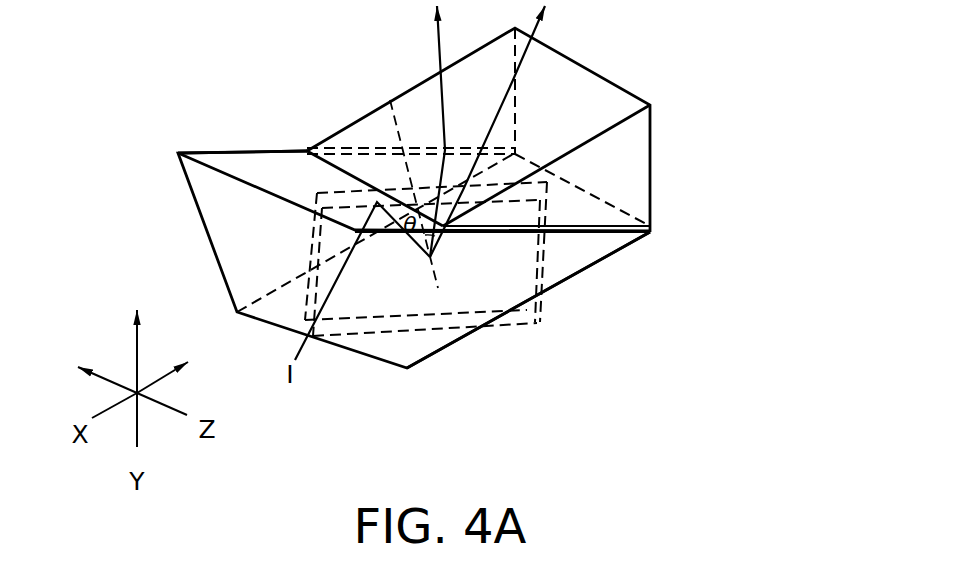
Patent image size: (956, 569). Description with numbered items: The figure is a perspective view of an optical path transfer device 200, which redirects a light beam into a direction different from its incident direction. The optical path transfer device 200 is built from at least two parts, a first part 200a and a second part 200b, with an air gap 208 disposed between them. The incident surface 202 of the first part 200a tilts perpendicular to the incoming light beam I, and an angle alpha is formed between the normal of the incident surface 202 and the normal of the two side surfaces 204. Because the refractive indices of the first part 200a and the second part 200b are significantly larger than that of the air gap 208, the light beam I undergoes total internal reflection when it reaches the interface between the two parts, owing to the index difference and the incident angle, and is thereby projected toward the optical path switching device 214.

The optical path transfer device 200 is at (565, 147).
The first part 200a is at (590, 250).
The second part 200b is at (610, 175).
The incident surface 202 is at (203, 222).
The side surfaces 204 is at (278, 150).
The air gap 208 is at (470, 229).
The optical path switching device 214 is at (538, 325).